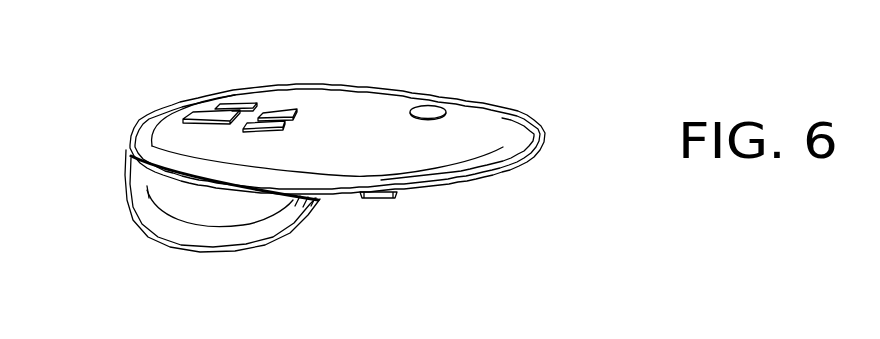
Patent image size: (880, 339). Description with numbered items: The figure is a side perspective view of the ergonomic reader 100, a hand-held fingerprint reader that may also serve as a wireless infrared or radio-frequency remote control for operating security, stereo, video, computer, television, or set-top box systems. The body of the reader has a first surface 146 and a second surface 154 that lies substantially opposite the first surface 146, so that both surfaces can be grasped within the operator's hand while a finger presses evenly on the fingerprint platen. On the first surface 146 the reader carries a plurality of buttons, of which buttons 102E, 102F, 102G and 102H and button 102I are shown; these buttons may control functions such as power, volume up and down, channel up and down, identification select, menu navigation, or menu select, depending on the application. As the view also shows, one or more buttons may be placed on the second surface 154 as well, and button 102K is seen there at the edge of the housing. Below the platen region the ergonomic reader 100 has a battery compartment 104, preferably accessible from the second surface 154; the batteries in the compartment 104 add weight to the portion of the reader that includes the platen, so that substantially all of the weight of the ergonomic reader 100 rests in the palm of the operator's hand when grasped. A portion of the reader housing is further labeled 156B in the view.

The ergonomic reader 100 is at (339, 165).
The button 102E is at (233, 106).
The button 102F is at (289, 114).
The button 102G is at (205, 114).
The button 102H is at (284, 128).
The button 102I is at (436, 108).
The button 102K is at (380, 198).
The battery compartment 104 is at (207, 228).
The first surface 146 is at (468, 150).
The second surface 154 is at (526, 162).
The bezel 156B is at (134, 106).